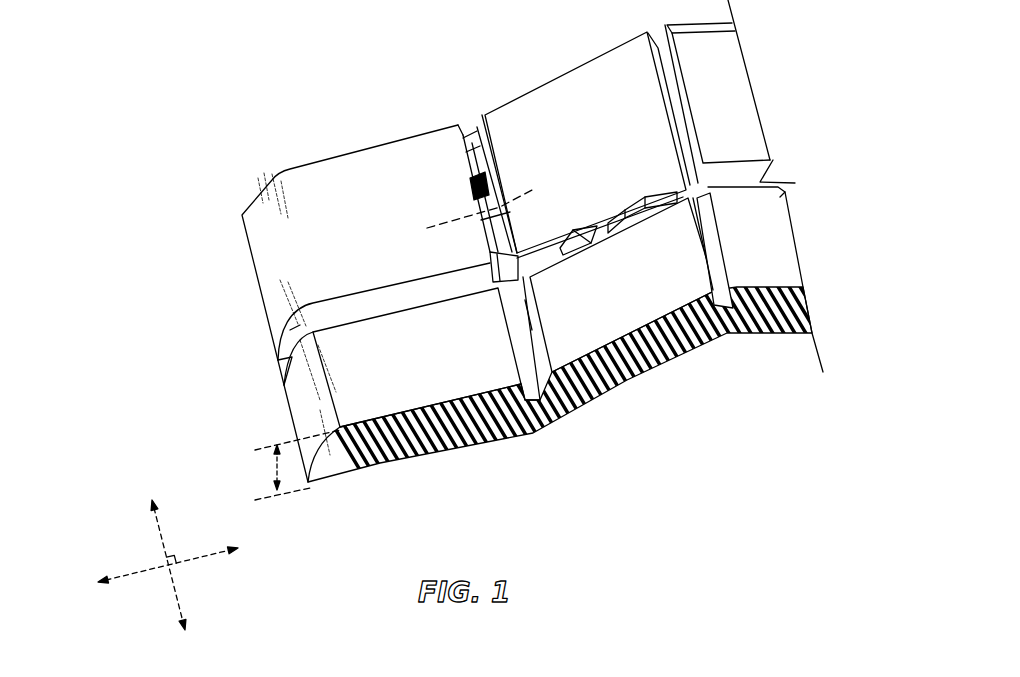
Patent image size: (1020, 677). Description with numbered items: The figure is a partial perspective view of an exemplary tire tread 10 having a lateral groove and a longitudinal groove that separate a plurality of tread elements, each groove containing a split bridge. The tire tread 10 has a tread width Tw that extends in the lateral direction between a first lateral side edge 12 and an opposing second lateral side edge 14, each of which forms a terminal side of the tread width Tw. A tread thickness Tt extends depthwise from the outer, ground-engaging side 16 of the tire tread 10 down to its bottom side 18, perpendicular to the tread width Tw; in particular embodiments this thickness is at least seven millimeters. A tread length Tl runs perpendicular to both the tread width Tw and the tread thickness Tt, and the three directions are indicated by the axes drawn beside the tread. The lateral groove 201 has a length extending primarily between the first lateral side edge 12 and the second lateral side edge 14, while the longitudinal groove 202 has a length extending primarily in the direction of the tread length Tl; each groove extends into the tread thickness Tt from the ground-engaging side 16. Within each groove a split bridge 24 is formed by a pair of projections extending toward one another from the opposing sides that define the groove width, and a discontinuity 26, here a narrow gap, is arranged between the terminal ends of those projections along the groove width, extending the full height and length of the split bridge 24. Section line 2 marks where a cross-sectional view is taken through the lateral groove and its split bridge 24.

The tire tread 10 is at (343, 44).
The first lateral side edge 12 is at (250, 254).
The second lateral side edge 14 is at (748, 68).
The outer, ground-engaging side 16 is at (376, 226).
The bottom side 18 is at (403, 463).
The lateral groove 201 is at (307, 335).
The longitudinal groove 202 is at (538, 323).
The split bridge 24 is at (470, 126).
The discontinuity 26 is at (493, 258).
The section line 2- 2 is at (427, 228).
The tread thickness Tt is at (275, 472).
The tread length Tl is at (158, 533).
The tread width Tw is at (200, 557).